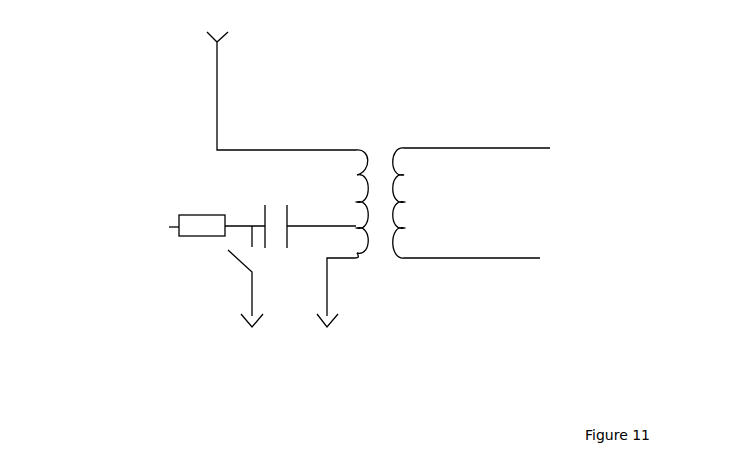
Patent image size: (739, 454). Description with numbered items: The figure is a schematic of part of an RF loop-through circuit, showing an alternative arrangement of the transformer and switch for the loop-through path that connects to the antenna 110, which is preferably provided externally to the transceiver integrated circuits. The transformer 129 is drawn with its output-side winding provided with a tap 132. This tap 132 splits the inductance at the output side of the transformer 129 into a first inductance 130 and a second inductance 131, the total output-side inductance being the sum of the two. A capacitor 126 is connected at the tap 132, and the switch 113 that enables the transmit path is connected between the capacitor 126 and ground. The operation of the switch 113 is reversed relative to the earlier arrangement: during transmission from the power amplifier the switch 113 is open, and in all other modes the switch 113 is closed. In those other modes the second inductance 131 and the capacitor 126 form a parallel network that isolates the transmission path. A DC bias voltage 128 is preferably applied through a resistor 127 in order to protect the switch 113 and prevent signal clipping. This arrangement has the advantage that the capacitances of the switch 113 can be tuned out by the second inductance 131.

The antenna 110 is at (222, 52).
The switch 113 is at (233, 258).
The capacitor 126 is at (262, 196).
The resistor 127 is at (197, 213).
The DC bias voltage 128 is at (123, 245).
The transformer 129 is at (386, 147).
The first inductance 130 is at (358, 188).
The second inductance 131 is at (366, 240).
The tap 132 is at (303, 228).